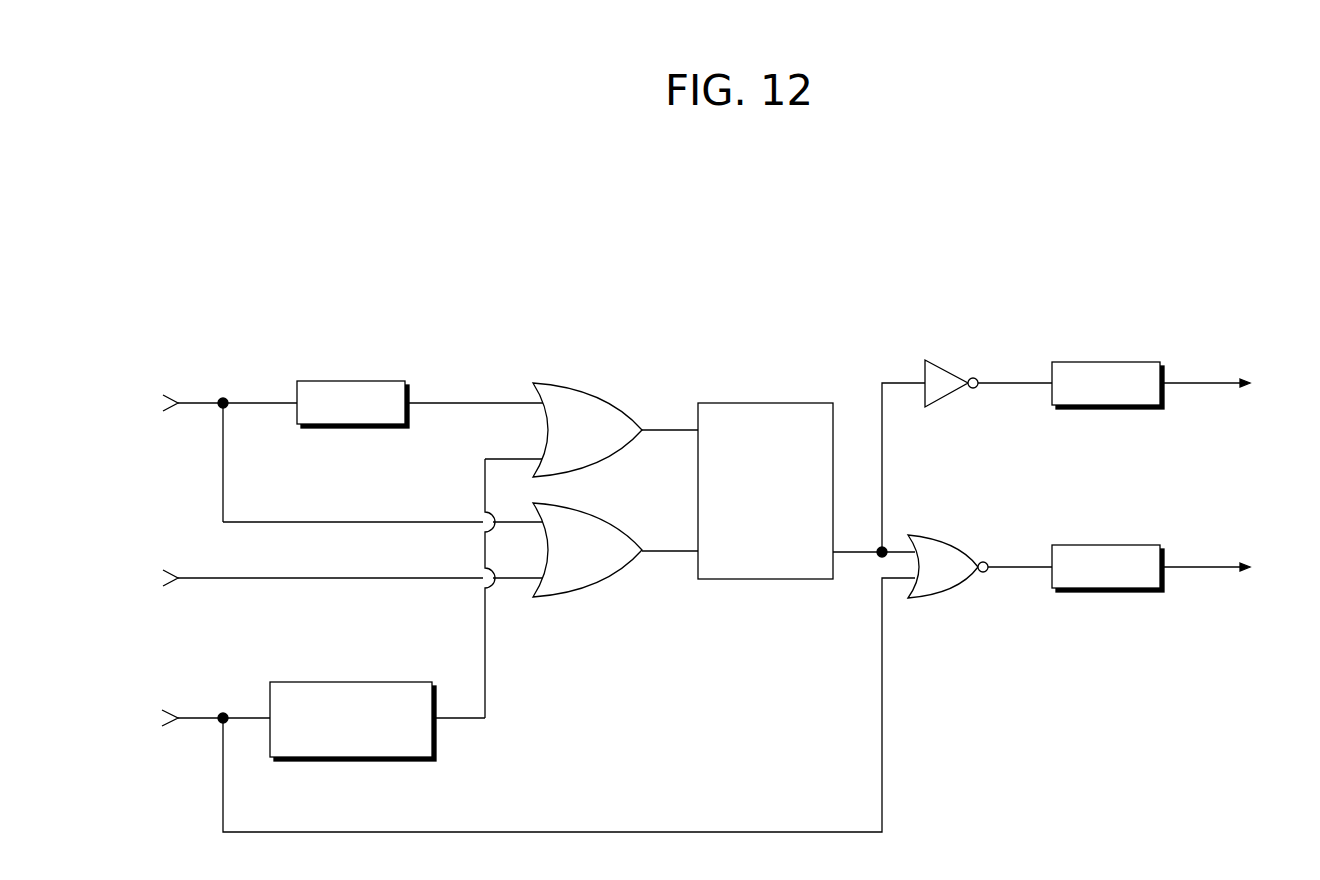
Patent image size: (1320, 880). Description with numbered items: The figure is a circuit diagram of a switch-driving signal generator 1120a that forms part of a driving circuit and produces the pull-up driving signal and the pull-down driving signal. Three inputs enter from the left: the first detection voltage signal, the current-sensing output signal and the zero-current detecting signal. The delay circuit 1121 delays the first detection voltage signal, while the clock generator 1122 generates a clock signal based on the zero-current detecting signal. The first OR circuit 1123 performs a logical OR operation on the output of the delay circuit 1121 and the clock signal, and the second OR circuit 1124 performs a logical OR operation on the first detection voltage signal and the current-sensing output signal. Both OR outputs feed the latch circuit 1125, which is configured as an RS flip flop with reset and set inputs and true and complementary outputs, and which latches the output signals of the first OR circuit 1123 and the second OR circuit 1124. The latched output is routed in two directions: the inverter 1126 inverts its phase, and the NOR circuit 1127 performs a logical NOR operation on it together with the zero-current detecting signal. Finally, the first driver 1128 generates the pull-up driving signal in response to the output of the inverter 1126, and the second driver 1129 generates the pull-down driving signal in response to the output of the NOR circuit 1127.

The switch-driving signal generator 1120a is at (722, 223).
The delay circuit 1121 is at (365, 381).
The clock generator 1122 is at (365, 682).
The first OR circuit 1123 is at (582, 383).
The second OR circuit 1124 is at (594, 591).
The latch circuit 1125 is at (763, 403).
The inverter 1126 is at (948, 368).
The NOR circuit 1127 is at (947, 539).
The first driver 1128 is at (1120, 362).
The second driver 1129 is at (1120, 545).